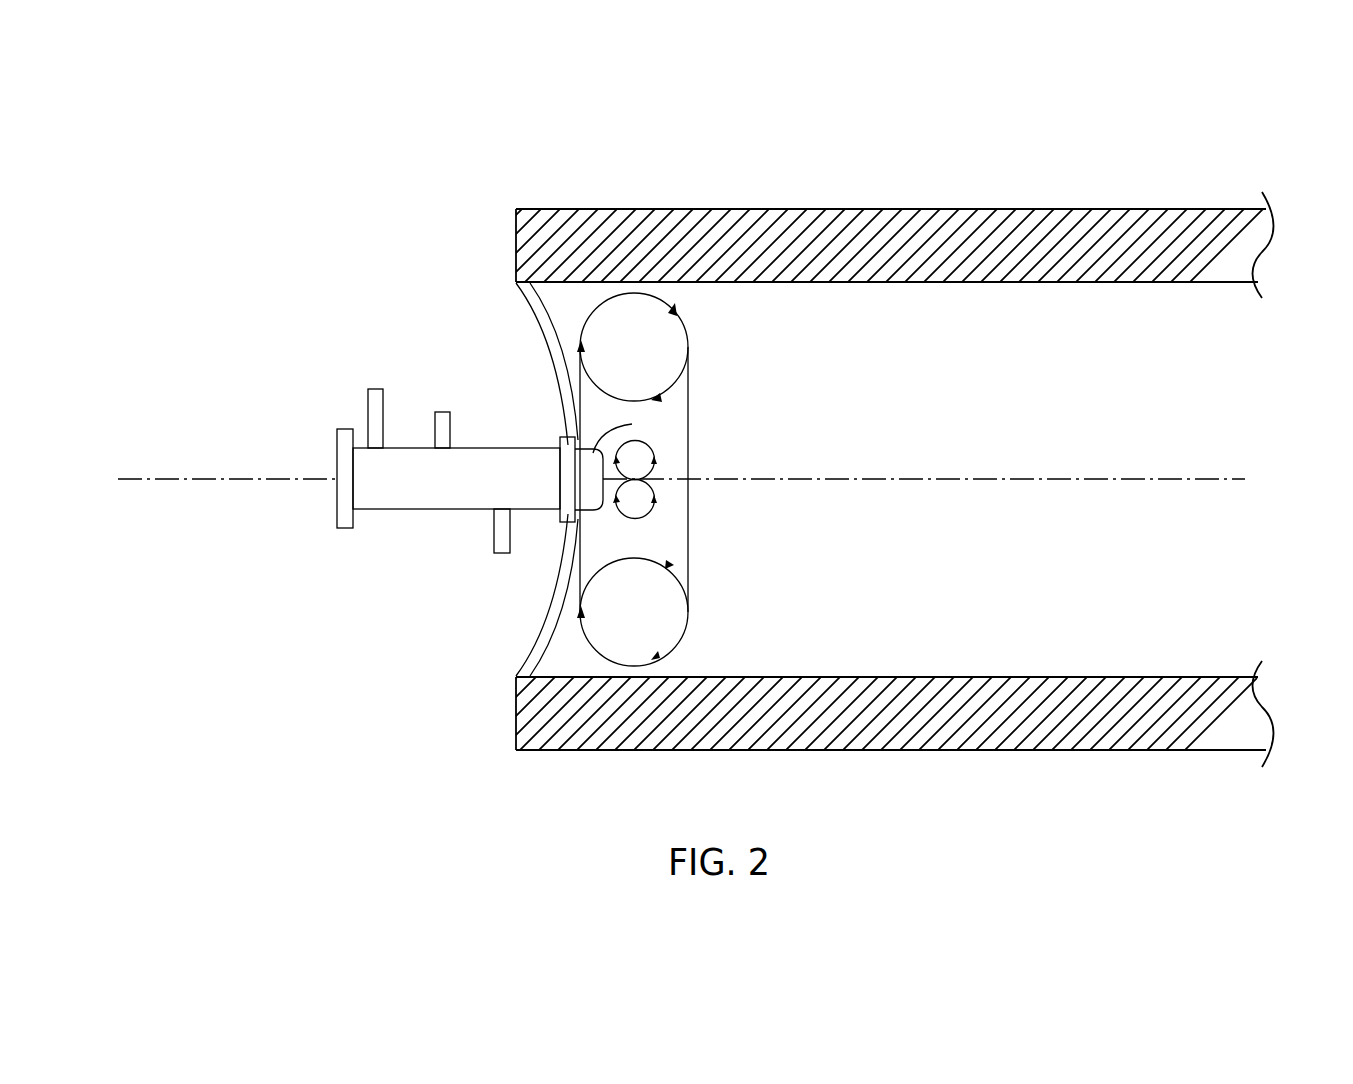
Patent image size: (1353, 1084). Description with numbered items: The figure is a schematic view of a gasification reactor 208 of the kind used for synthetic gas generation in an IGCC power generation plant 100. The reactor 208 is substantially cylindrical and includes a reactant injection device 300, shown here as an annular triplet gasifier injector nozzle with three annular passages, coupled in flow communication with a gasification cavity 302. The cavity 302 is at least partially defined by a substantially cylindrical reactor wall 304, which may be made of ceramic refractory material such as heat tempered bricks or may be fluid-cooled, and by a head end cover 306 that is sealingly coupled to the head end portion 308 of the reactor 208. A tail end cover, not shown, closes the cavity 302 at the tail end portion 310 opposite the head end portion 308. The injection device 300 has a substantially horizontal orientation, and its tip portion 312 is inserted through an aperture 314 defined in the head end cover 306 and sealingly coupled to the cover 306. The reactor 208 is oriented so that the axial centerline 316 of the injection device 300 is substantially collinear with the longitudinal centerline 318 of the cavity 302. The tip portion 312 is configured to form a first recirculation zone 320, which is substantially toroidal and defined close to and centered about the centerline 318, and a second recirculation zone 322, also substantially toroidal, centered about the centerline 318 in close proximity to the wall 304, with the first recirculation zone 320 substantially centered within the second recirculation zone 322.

The additive manufacturing system 100 is at (412, 88).
The gasification reactor 208 is at (412, 156).
The reactant injection device 300 is at (433, 512).
The gasification cavity 302 is at (926, 378).
The reactor wall 304 is at (955, 208).
The head end cover 306 is at (555, 381).
The head end portion 308 is at (435, 228).
The tail end portion 310 is at (1182, 379).
The tip portion 312 is at (593, 506).
The aperture 314 is at (634, 433).
The axial centerline 316 is at (227, 480).
The longitudinal centerline 318 is at (962, 481).
The first recirculation zone 320 is at (675, 455).
The second recirculation zone 322 is at (672, 341).